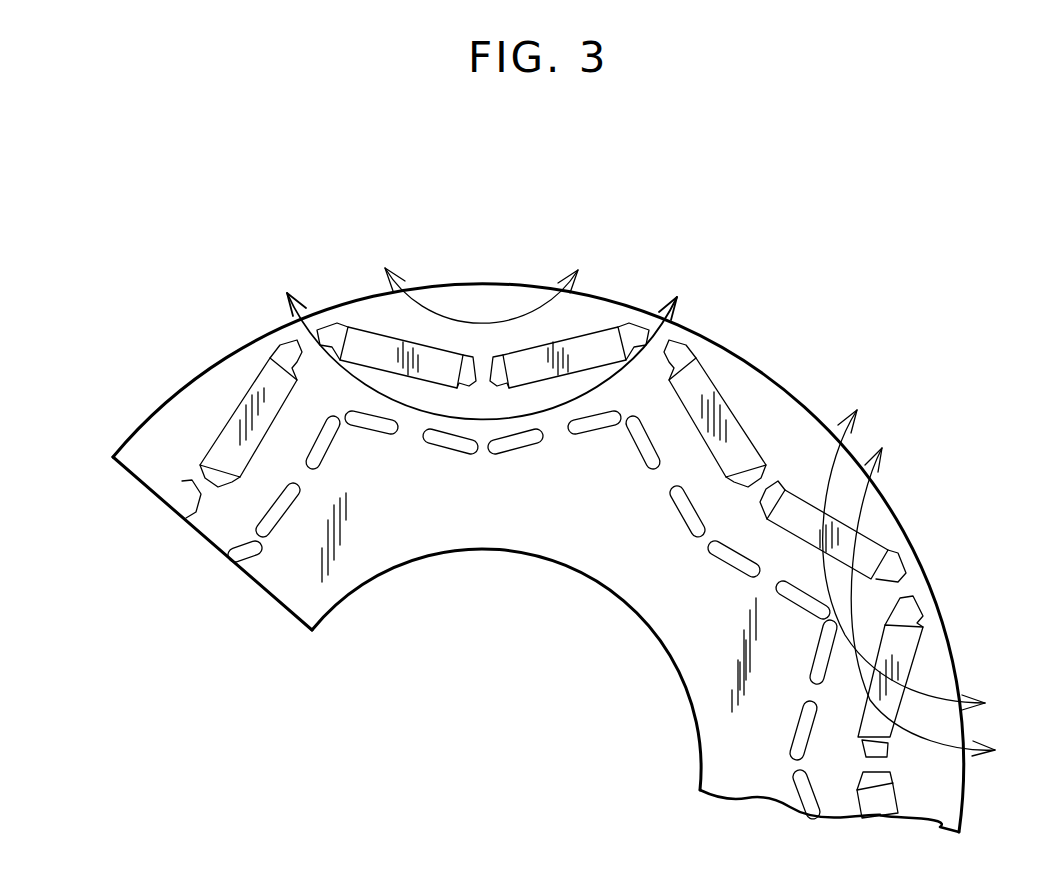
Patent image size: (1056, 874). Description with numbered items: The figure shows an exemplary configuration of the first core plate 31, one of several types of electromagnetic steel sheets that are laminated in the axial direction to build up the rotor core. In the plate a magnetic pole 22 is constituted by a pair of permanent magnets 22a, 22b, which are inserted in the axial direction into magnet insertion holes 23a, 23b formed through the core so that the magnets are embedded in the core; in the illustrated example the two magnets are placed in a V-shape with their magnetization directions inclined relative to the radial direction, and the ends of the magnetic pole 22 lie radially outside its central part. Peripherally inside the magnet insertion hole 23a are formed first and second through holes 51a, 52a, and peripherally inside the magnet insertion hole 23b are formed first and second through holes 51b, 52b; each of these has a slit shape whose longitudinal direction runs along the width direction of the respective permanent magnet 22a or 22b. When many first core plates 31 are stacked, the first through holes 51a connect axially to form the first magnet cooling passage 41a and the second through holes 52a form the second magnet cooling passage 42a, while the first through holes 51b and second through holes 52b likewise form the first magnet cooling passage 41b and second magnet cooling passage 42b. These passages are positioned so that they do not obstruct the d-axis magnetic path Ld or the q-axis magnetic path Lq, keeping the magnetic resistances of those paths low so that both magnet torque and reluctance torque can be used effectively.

The first core plate 31 is at (180, 415).
The magnetic pole 22 is at (368, 212).
The permanent magnet 22a is at (370, 342).
The permanent magnet 22b is at (527, 365).
The magnet insertion hole 23a is at (333, 337).
The magnet insertion hole 23b is at (637, 335).
The first through hole 51a is at (456, 538).
The first through hole 51b is at (530, 545).
The second through hole 52a is at (378, 541).
The second through hole 52b is at (610, 554).
The first magnet cooling passage 41a is at (447, 447).
The first magnet cooling passage 41b is at (512, 447).
The second magnet cooling passage 42a is at (380, 428).
The second magnet cooling passage 42b is at (580, 428).
The q-axis magnetic path Lq is at (530, 308).
The d-axis magnetic path Ld is at (858, 508).